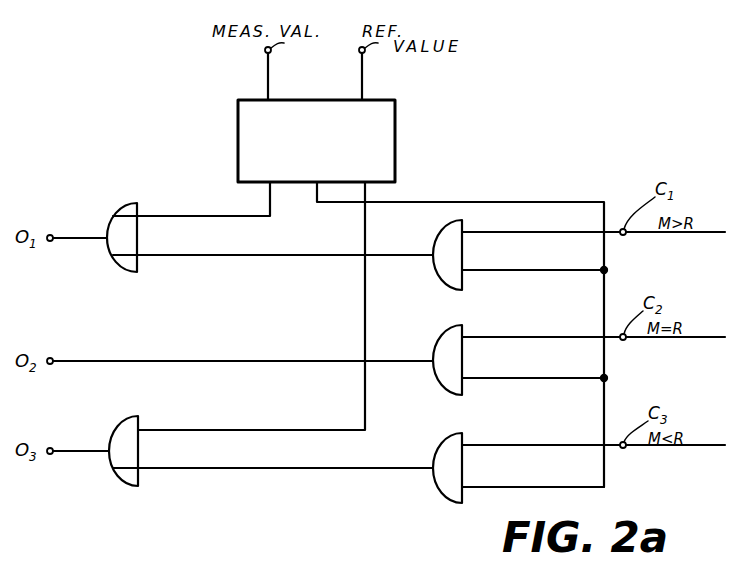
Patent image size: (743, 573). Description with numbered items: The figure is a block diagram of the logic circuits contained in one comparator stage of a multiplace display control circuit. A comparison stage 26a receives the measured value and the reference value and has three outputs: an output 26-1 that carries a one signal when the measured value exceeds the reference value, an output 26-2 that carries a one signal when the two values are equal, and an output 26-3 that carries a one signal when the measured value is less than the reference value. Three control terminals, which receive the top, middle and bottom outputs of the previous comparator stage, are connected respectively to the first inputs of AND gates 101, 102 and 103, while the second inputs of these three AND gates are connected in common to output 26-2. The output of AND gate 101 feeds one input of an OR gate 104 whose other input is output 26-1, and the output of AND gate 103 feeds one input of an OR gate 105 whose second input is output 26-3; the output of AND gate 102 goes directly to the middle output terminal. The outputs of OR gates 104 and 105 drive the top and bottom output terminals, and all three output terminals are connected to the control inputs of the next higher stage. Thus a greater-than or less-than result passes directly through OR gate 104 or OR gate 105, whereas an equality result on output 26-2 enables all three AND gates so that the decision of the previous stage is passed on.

The comparison stage 26a is at (392, 150).
The output 26-1 is at (207, 214).
The output 26-2 is at (505, 202).
The output 26-3 is at (368, 192).
The AND gate 101 is at (437, 226).
The AND gate 102 is at (442, 330).
The AND gate 103 is at (448, 437).
The OR gate 104 is at (133, 205).
The OR gate 105 is at (127, 418).